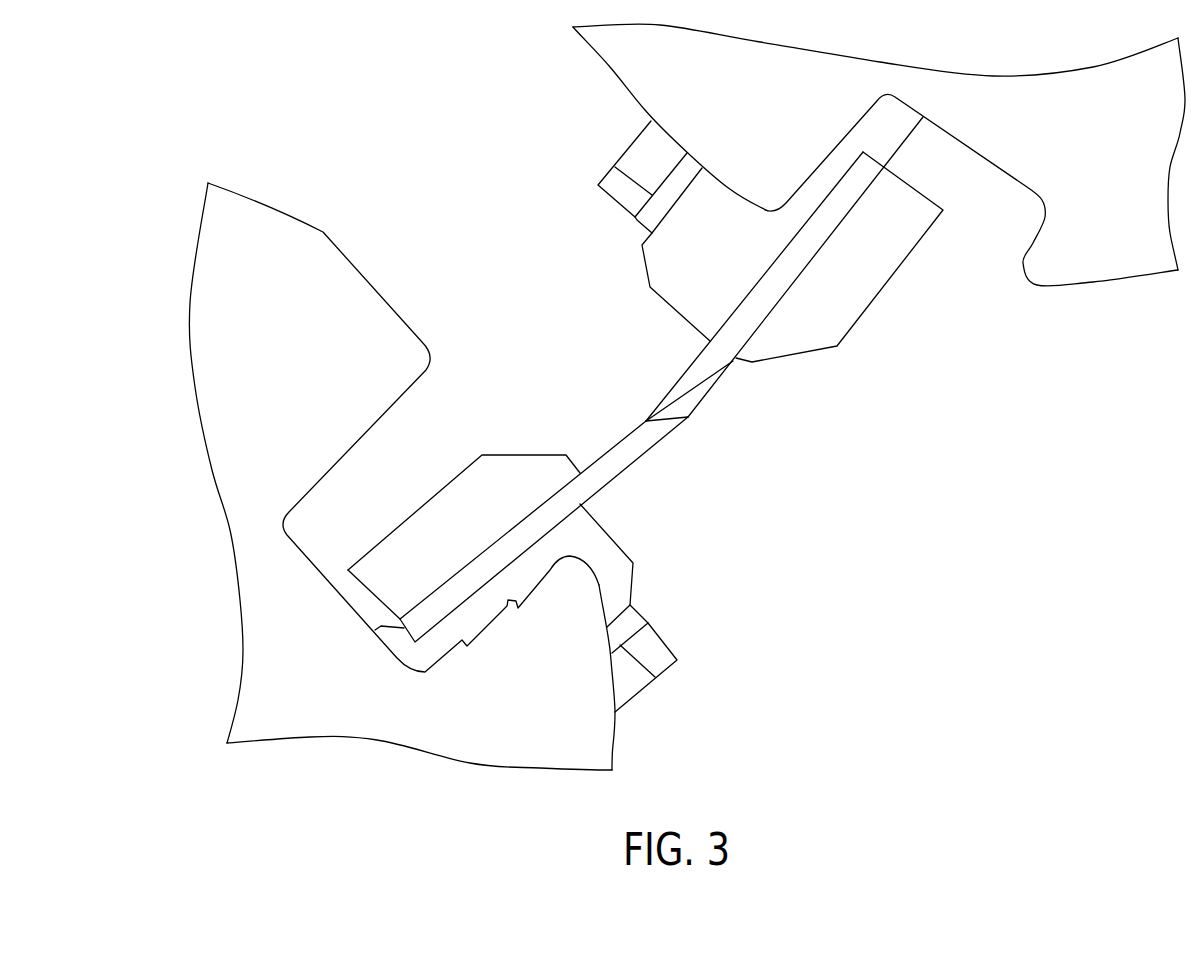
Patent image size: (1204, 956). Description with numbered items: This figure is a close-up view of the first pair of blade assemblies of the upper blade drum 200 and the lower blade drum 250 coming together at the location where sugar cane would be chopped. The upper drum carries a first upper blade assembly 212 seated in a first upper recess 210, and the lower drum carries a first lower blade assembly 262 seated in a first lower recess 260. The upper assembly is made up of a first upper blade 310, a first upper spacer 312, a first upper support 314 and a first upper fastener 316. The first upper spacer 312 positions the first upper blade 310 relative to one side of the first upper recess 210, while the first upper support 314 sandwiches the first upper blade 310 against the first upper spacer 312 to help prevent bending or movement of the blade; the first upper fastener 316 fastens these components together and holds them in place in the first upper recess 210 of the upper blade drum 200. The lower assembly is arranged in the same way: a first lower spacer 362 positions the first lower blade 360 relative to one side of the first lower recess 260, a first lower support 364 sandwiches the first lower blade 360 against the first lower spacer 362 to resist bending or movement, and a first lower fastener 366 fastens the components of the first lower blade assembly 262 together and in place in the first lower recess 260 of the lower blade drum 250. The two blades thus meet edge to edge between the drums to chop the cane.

The upper blade drum 200 is at (823, 78).
The first upper recess 210 is at (1003, 310).
The first upper blade assembly 212 is at (948, 390).
The lower blade drum 250 is at (221, 403).
The first lower recess 260 is at (466, 378).
The first lower blade assembly 262 is at (693, 513).
The first upper blade 310 is at (716, 364).
The first upper spacer 312 is at (670, 278).
The first upper support 314 is at (835, 322).
The first upper fastener 316 is at (645, 160).
The first lower blade 360 is at (613, 440).
The first lower spacer 362 is at (642, 578).
The first lower support 364 is at (497, 477).
The first lower fastener 366 is at (658, 658).